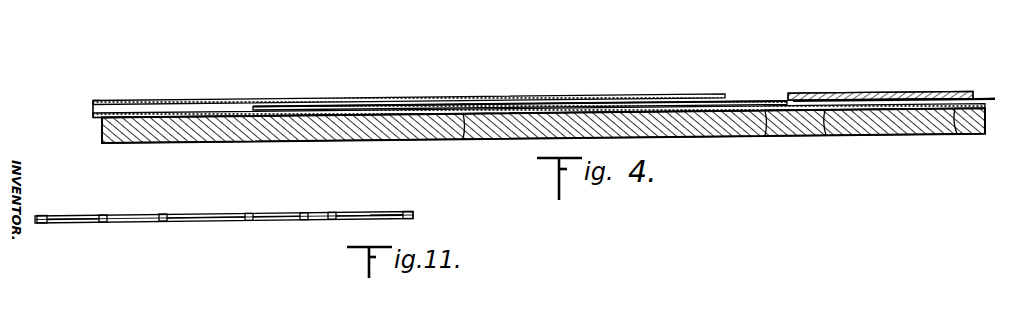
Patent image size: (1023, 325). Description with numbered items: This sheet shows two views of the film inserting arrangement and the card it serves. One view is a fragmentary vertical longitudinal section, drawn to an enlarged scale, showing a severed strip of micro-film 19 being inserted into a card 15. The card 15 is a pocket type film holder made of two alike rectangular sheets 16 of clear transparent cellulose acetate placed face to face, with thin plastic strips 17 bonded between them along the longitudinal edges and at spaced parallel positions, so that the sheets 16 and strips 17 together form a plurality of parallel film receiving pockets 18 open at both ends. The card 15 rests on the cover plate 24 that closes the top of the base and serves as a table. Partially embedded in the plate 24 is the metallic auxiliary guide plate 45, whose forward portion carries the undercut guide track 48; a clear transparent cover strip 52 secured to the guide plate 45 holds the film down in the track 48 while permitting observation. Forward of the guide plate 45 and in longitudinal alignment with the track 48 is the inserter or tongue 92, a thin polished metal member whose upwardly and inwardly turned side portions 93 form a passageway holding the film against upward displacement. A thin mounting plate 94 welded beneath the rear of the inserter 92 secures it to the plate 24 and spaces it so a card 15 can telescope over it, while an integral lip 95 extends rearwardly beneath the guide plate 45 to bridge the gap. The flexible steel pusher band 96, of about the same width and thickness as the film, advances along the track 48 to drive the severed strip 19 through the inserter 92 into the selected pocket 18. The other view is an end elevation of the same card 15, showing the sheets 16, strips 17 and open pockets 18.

In FIG. 4, the card 15 is at (185, 100).
In FIG. 11, the card 15 is at (205, 212).
In FIG. 4, the rectangular sheets 16 is at (122, 100).
In FIG. 11, the rectangular sheets 16 is at (370, 212).
In FIG. 4, the plastic strips 17 is at (92, 108).
In FIG. 11, the plastic strips 17 is at (40, 216).
In FIG. 4, the film receiving pockets 18 is at (192, 113).
In FIG. 11, the film receiving pockets 18 is at (146, 215).
In FIG. 4, the strips of photographic micro-film 19 is at (262, 106).
In FIG. 4, the plate 24 is at (700, 132).
In FIG. 4, the auxiliary guide plate 45 is at (957, 134).
In FIG. 4, the guide groove or track 48 is at (898, 100).
In FIG. 4, the cover strip 52 is at (823, 93).
In FIG. 4, the inserter or tongue 92 is at (463, 139).
In FIG. 4, the upwardly and inwardly turned portions 93 is at (466, 104).
In FIG. 4, the mounting plate 94 is at (765, 136).
In FIG. 4, the lip 95 is at (826, 135).
In FIG. 4, the pusher member 96 is at (988, 99).